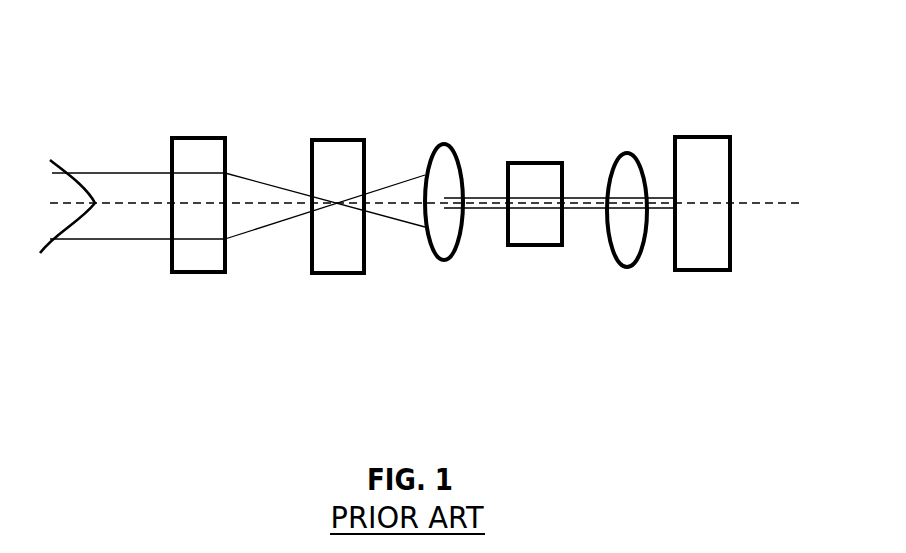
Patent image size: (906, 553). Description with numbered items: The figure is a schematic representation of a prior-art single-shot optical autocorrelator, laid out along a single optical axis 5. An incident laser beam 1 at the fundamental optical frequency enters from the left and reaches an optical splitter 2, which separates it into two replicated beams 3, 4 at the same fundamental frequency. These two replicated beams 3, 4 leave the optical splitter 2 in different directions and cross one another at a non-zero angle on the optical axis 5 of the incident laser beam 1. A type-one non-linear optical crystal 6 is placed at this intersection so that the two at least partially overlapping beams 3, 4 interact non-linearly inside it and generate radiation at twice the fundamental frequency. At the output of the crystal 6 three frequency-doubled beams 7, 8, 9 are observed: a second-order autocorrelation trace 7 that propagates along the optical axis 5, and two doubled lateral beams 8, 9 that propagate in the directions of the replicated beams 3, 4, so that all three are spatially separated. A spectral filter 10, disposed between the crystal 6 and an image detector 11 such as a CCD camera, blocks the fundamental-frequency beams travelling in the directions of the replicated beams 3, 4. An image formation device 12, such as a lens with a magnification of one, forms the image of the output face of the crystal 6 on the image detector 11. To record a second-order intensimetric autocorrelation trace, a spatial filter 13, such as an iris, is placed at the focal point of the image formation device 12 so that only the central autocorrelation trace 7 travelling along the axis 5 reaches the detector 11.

The incident laser beam 1 is at (100, 173).
The optical splitter 2 is at (193, 138).
The replicated beam 3 is at (265, 177).
The replicated beam 4 is at (277, 227).
The optical axis 5 is at (763, 205).
The non-linear optical crystal 6 is at (330, 137).
The autocorrelation trace 7 is at (485, 212).
The doubled lateral beam 8 is at (397, 177).
The doubled lateral beam 9 is at (398, 227).
The spectral filter 10 is at (447, 142).
The image detector 11 is at (700, 270).
The image formation device 12 is at (538, 248).
The spatial filter 13 is at (630, 148).